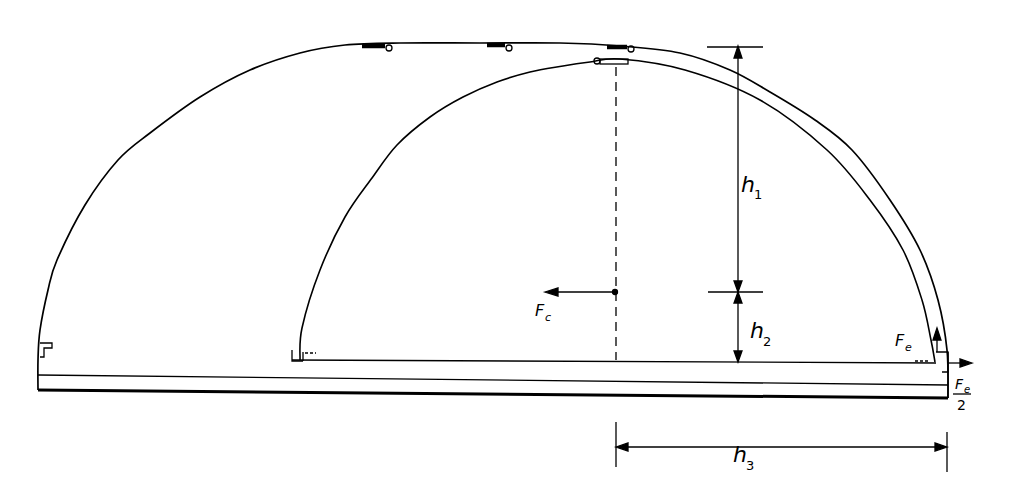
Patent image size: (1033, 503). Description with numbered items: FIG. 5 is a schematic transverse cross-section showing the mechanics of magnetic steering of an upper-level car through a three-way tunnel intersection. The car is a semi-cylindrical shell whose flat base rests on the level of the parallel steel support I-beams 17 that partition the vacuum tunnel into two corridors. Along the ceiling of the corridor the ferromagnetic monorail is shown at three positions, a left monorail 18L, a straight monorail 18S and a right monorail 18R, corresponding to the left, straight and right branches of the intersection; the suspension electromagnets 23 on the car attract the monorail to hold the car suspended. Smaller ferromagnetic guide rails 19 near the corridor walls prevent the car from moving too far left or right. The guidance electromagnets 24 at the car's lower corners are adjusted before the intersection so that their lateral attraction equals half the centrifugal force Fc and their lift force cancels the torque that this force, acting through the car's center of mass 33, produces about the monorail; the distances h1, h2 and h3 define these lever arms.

The steel support I-beam 17 is at (251, 391).
The monorail (left branch) 18L is at (400, 26).
The monorail (straight branch) 18S is at (520, 26).
The monorail (right branch) 18R is at (632, 46).
The guide rail 19 is at (46, 352).
The suspension electromagnet 23 is at (596, 64).
The guidance electromagnet 24 is at (292, 351).
The center of mass 33 is at (617, 291).